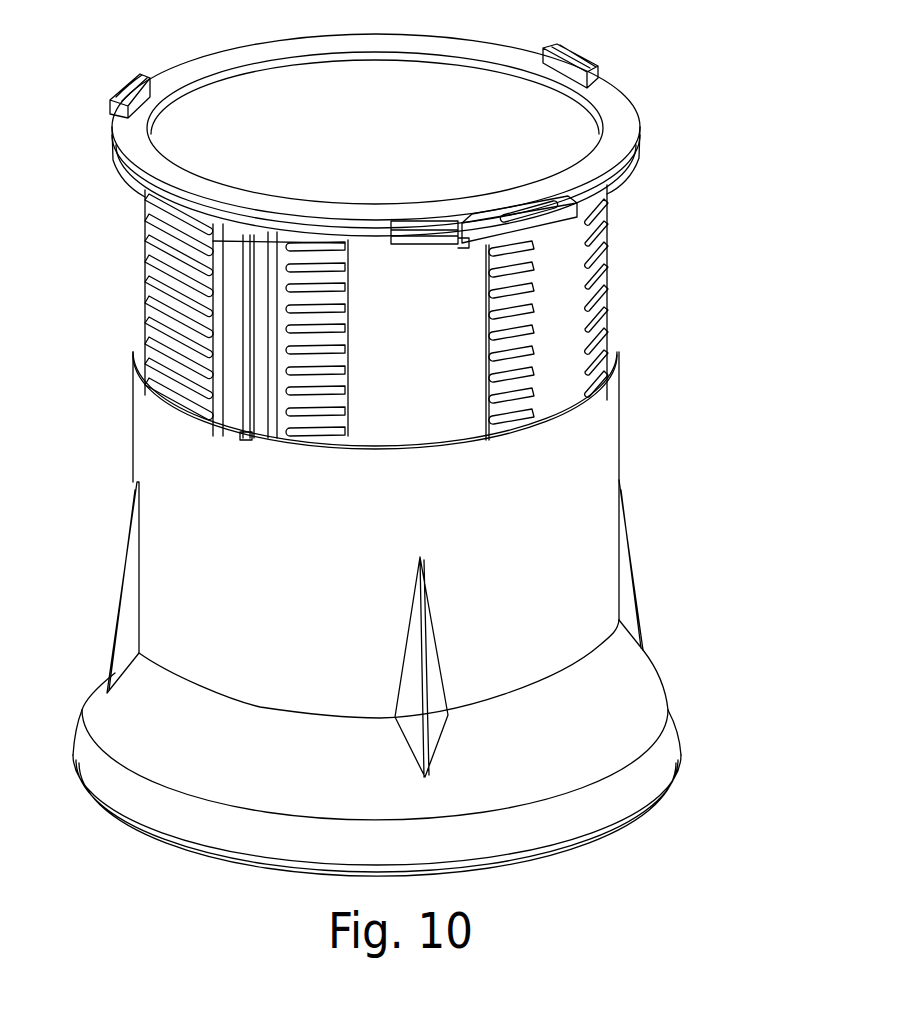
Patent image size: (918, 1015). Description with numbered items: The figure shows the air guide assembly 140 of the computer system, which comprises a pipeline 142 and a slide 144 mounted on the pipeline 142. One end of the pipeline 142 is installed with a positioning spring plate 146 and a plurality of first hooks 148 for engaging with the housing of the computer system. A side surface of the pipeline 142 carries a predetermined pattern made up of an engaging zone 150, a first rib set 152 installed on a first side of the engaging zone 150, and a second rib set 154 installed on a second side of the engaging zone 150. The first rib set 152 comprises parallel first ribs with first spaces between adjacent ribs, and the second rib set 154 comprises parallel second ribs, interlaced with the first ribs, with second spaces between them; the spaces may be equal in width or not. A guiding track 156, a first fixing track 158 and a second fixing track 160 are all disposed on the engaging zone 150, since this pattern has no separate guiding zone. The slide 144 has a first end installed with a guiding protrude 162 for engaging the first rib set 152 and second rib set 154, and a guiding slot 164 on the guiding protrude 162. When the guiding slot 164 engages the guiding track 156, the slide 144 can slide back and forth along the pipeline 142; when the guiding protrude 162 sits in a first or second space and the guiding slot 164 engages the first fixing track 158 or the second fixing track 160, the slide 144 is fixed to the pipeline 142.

The air guide assembly 140 is at (660, 207).
The pipeline 142 is at (567, 302).
The slide 144 is at (150, 428).
The positioning spring plate 146 is at (557, 210).
The first hooks 148 is at (122, 86).
The engaging zone 150 is at (268, 425).
The first rib set 152 is at (152, 340).
The second rib set 154 is at (305, 433).
The guiding track 156 is at (248, 238).
The first fixing track 158 is at (220, 230).
The second fixing track 160 is at (278, 245).
The guiding protrude 162 is at (238, 430).
The guiding slot 164 is at (242, 440).